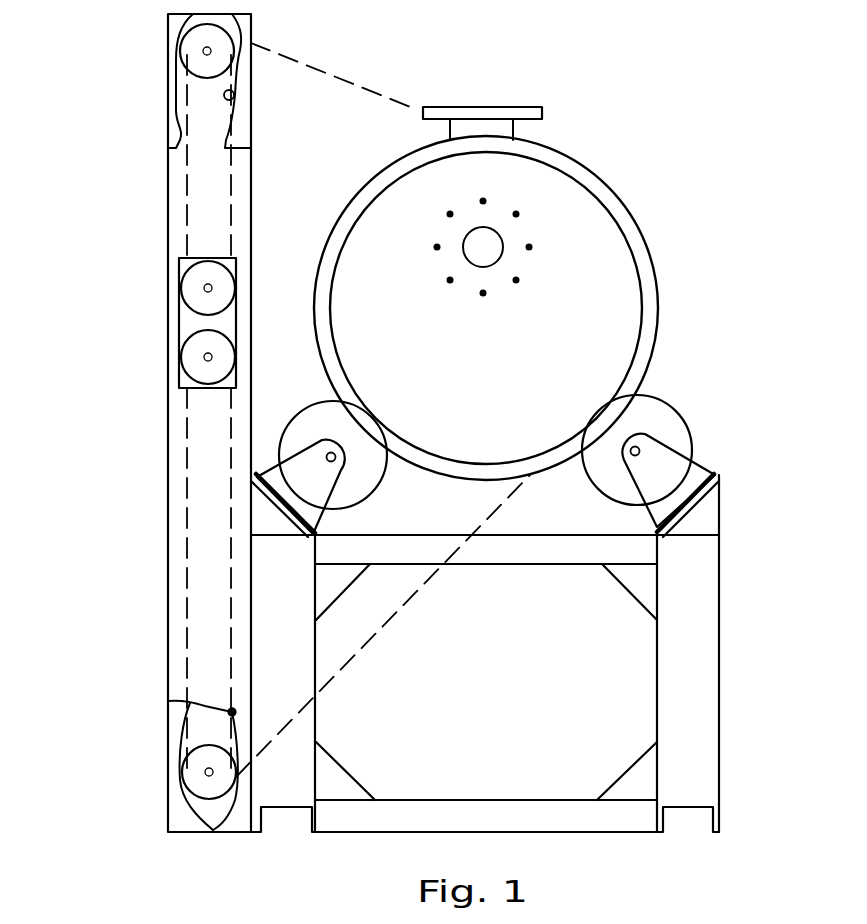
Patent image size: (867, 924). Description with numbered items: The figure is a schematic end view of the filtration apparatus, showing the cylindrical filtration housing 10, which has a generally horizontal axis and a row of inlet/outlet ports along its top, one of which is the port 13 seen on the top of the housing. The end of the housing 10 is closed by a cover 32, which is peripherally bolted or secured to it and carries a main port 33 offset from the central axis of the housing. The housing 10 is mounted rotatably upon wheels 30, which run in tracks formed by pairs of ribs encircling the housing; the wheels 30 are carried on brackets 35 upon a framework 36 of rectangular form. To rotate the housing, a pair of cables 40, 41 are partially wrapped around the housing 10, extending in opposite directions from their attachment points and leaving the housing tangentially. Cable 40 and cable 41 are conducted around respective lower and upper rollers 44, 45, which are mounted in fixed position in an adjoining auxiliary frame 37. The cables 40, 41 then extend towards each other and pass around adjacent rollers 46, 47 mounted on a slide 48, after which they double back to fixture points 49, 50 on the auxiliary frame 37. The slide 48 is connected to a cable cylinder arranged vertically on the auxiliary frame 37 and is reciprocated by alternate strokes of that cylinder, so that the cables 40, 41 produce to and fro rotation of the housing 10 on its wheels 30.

The cylindrical filtration housing 10 is at (632, 233).
The inlet/outlet port 13 is at (490, 100).
The wheels 30 is at (310, 413).
The cover 32 is at (612, 330).
The main port 33 is at (477, 260).
The brackets 35 is at (318, 480).
The framework 36 is at (695, 641).
The auxiliary frame 37 is at (160, 483).
The cable 40 is at (347, 75).
The cable 41 is at (180, 596).
The lower roller 44 is at (200, 773).
The upper roller 45 is at (185, 48).
The roller 46 is at (192, 357).
The roller 47 is at (192, 282).
The slide 48 is at (192, 320).
The fixture point 49 is at (200, 706).
The fixture point 50 is at (224, 98).